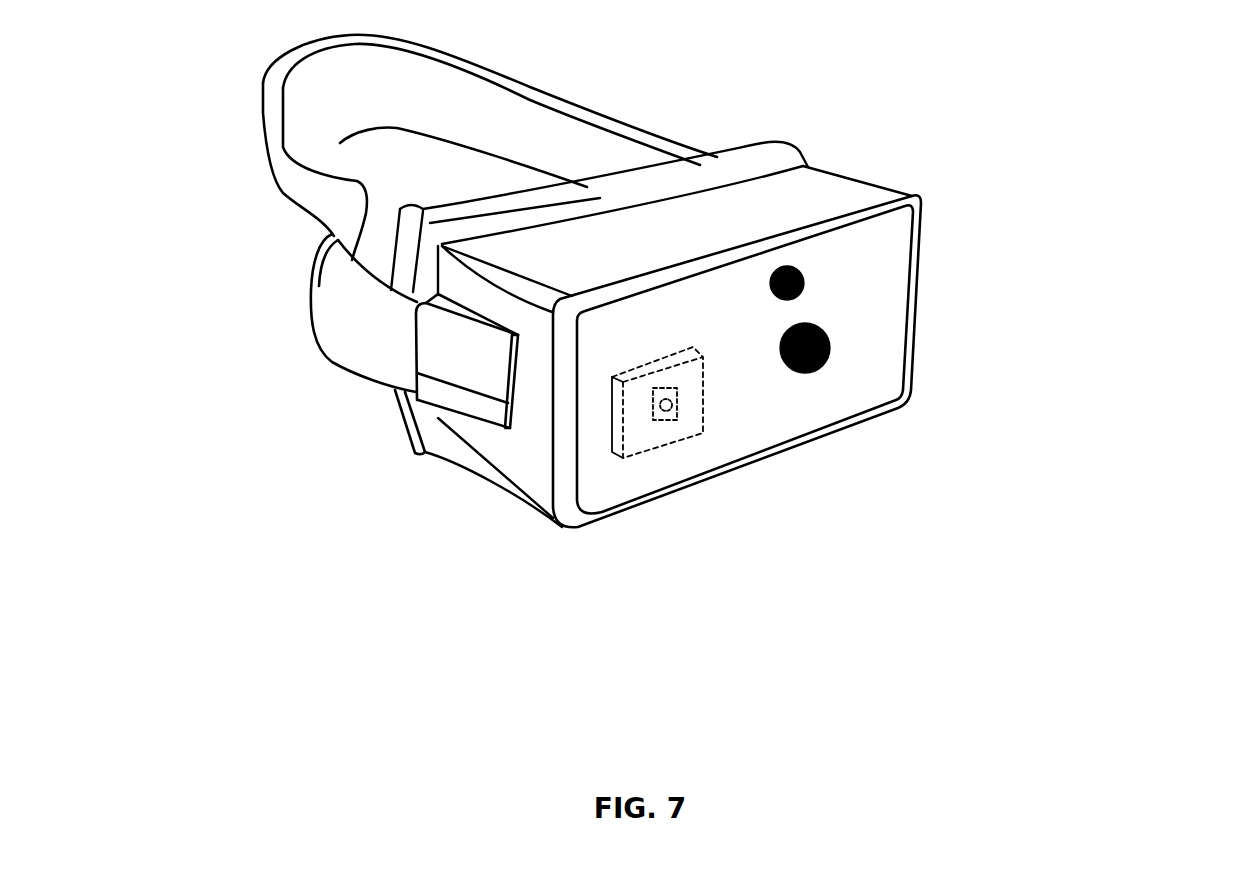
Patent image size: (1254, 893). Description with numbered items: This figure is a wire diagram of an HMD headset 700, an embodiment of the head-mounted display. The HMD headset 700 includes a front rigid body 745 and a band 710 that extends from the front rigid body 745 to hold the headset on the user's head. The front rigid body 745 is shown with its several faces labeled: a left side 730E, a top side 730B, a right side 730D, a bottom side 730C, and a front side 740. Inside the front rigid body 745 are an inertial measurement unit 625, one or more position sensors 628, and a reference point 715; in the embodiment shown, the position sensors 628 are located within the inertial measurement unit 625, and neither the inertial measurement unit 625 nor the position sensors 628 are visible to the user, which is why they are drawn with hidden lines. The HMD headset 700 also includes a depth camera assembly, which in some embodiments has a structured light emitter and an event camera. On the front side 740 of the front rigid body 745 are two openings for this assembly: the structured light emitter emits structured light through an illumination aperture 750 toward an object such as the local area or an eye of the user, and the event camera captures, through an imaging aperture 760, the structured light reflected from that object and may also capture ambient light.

The HMD headset 700 is at (150, 68).
The band 710 is at (597, 107).
The reference point 715 is at (667, 413).
The inertial measurement unit 625 is at (707, 415).
The position sensors 628 is at (653, 422).
The top side 730B is at (515, 247).
The bottom side 730C is at (478, 500).
The right side 730D is at (524, 462).
The left side 730E is at (889, 178).
The front side 740 is at (605, 487).
The front rigid body 745 is at (922, 180).
The illumination aperture 750 is at (805, 283).
The imaging aperture 760 is at (830, 352).